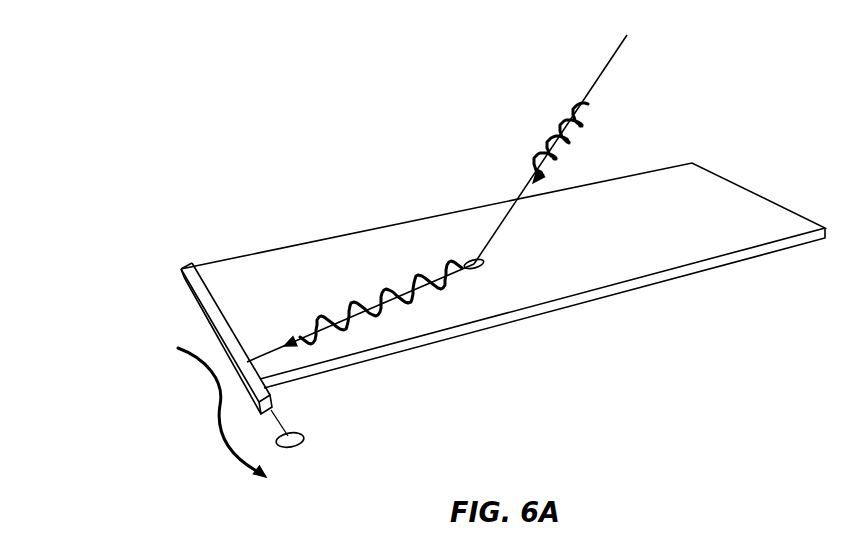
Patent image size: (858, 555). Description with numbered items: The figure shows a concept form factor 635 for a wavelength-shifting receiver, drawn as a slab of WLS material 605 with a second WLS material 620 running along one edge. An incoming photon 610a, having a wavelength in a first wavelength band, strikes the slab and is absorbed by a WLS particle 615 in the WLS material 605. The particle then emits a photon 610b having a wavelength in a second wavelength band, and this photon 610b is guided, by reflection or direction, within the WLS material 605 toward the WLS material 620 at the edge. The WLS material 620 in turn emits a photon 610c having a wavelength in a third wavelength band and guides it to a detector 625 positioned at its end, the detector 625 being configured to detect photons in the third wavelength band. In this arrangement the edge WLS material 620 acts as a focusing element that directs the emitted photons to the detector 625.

The WLS material 605 is at (477, 207).
The photon 610a is at (573, 142).
The photon 610b is at (420, 305).
The photon 610c is at (213, 408).
The WLS particle 615 is at (480, 268).
The WLS material 620 is at (197, 310).
The detector 625 is at (302, 446).
The concept form factor 635 is at (758, 193).